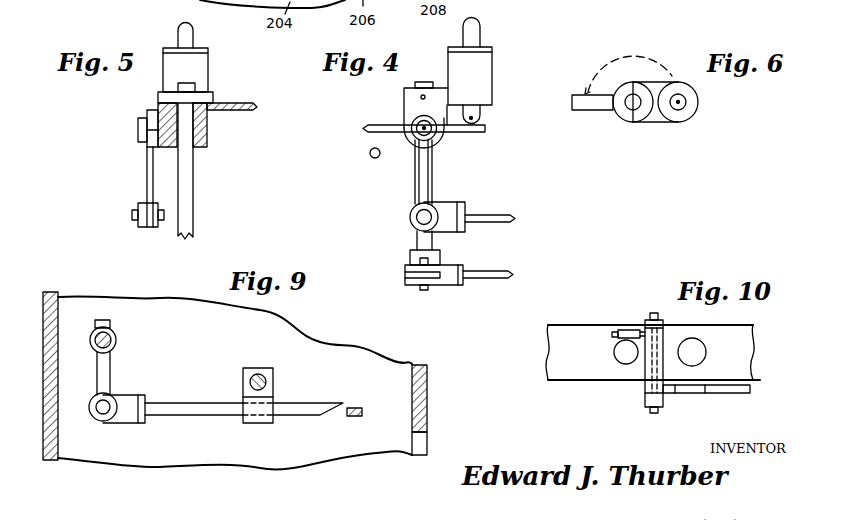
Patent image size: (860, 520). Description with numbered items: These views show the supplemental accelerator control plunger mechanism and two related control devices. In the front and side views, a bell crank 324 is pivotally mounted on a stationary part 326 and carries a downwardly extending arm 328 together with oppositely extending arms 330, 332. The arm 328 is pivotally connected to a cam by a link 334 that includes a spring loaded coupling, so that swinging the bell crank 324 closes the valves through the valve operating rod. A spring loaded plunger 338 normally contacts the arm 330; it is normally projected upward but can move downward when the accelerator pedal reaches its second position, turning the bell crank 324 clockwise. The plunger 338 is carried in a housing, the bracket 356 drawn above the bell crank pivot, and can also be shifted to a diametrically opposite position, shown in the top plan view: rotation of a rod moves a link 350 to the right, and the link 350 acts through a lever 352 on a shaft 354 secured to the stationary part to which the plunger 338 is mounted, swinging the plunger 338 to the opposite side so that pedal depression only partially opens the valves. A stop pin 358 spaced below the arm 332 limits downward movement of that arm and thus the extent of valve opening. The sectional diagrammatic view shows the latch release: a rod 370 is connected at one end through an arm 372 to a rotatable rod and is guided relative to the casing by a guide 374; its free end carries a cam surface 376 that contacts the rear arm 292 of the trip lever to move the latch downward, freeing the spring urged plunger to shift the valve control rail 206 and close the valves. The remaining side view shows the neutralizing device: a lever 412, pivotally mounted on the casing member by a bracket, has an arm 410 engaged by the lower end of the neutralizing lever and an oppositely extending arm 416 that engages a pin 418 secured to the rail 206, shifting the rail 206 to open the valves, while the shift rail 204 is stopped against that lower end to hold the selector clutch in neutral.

In FIG. 10, the shift rail 204 is at (697, 350).
In FIG. 10, the valve control rail 206 is at (620, 355).
In FIG. 9, the rear arm 292 is at (355, 417).
In FIG. 5, the bell crank 324 is at (155, 113).
In FIG. 5, the stationary part 326 is at (205, 139).
In FIG. 5, the downwardly extending arm 328 is at (148, 177).
In FIG. 4, the downwardly extending arm 328 is at (430, 183).
In FIG. 4, the arm 330 is at (473, 133).
In FIG. 4, the arm 332 is at (366, 129).
In FIG. 6, the arm 332 is at (592, 112).
In FIG. 4, the link 334 is at (432, 139).
In FIG. 5, the spring loaded plunger 338 is at (190, 37).
In FIG. 4, the spring loaded plunger 338 is at (474, 33).
In FIG. 6, the spring loaded plunger 338 is at (680, 105).
In FIG. 4, the link 350 is at (490, 272).
In FIG. 4, the lever 352 is at (405, 275).
In FIG. 5, the shaft 354 is at (193, 223).
In FIG. 4, the shaft 354 is at (418, 242).
In FIG. 4, the bracket 356 is at (408, 108).
In FIG. 4, the stop pin 358 is at (370, 157).
In FIG. 9, the rod 370 is at (175, 403).
In FIG. 9, the arm 372 is at (108, 372).
In FIG. 9, the guide 374 is at (268, 378).
In FIG. 9, the cam surface 376 is at (330, 404).
In FIG. 10, the arm 410 is at (720, 394).
In FIG. 10, the lever 412 is at (660, 338).
In FIG. 10, the arm 416 is at (635, 330).
In FIG. 10, the pin 418 is at (628, 330).